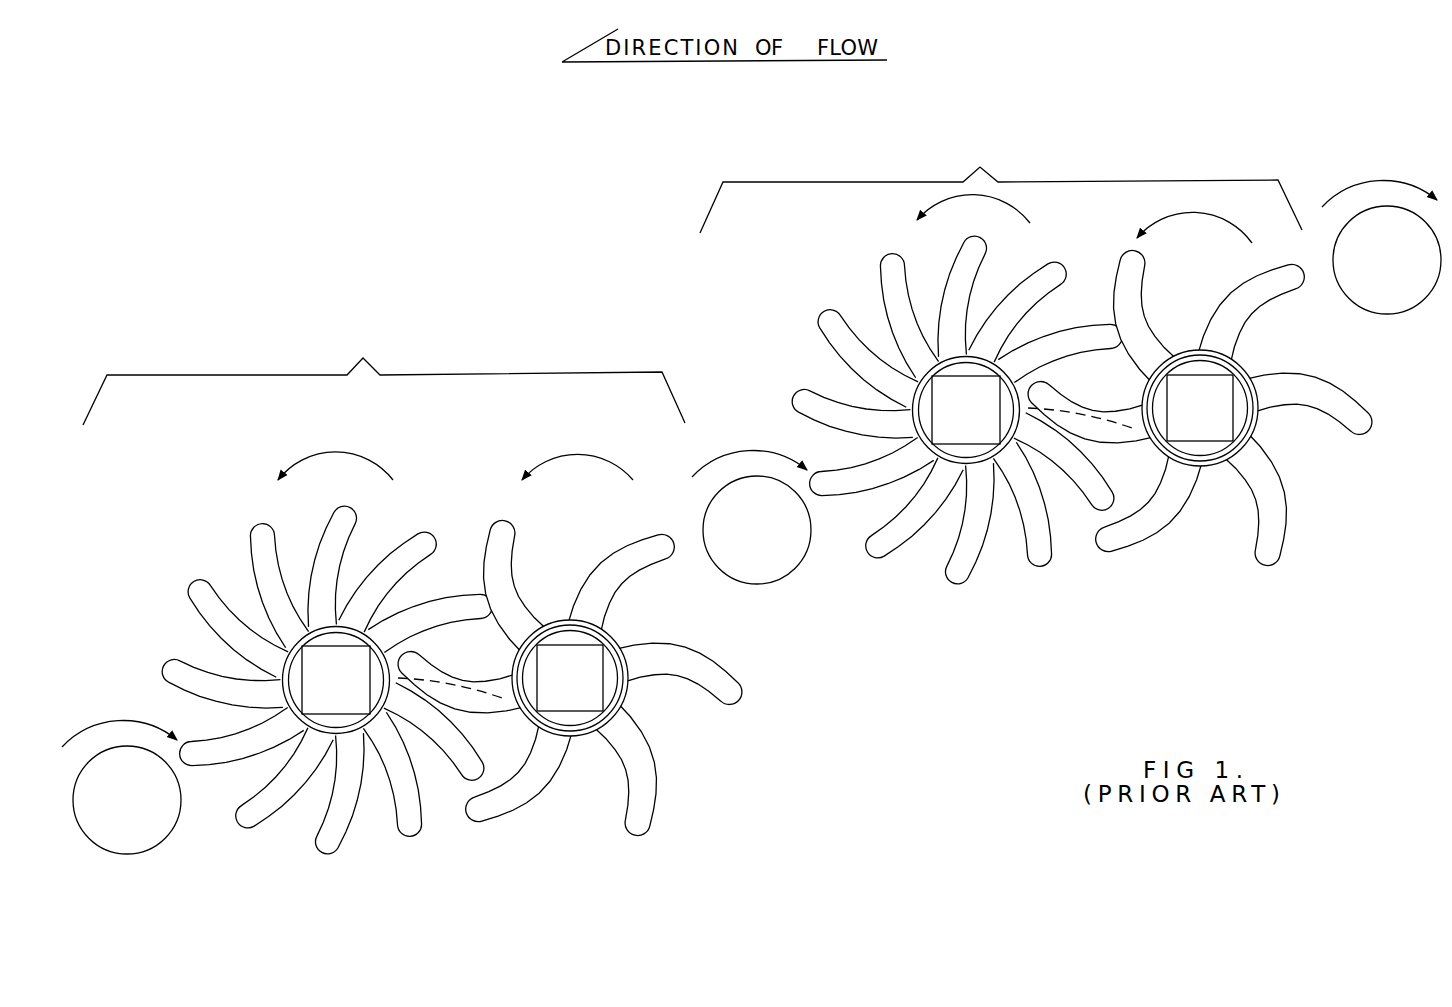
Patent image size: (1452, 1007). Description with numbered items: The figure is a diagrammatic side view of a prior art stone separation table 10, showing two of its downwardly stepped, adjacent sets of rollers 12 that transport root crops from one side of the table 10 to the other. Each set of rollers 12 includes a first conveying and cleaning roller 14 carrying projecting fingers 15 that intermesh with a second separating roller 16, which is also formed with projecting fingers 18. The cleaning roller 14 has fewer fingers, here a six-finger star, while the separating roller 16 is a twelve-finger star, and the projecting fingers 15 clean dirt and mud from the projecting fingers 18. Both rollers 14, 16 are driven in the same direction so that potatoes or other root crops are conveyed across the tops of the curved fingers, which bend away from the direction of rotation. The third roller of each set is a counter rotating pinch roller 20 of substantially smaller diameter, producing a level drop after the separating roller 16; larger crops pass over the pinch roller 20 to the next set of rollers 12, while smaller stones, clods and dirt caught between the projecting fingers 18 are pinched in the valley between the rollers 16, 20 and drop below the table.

The stone separation table 10 is at (192, 330).
The set of rollers 12 is at (692, 282).
The first conveying and cleaning roller 14 is at (678, 814).
The projecting fingers 15 is at (526, 794).
The second separating roller 16 is at (331, 859).
The projecting fingers 18 is at (327, 817).
The counter rotating pinch roller 20 is at (127, 857).